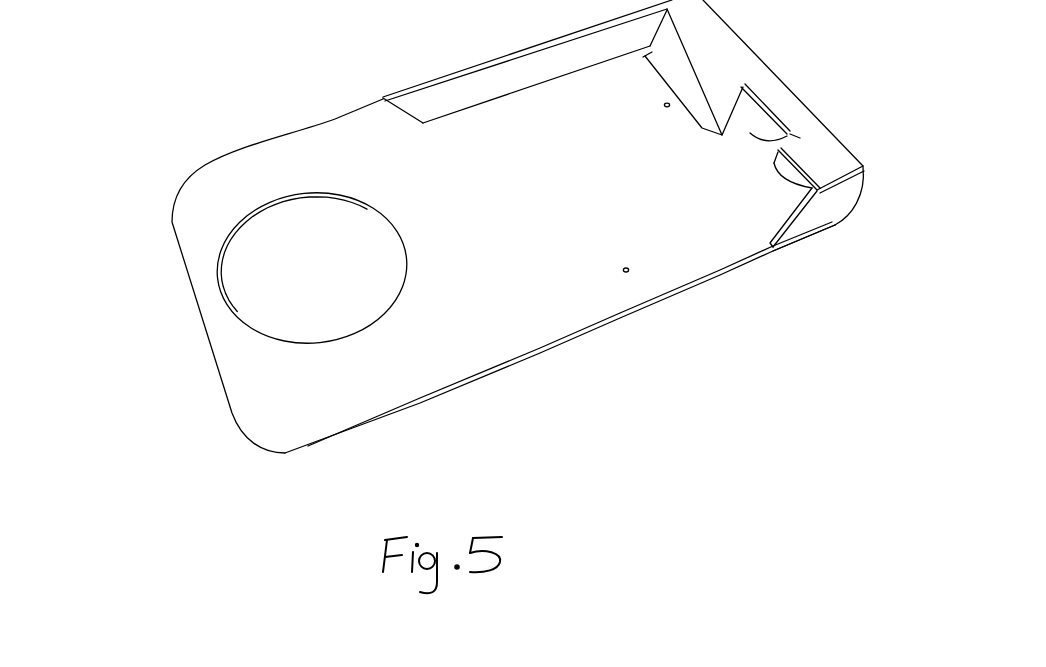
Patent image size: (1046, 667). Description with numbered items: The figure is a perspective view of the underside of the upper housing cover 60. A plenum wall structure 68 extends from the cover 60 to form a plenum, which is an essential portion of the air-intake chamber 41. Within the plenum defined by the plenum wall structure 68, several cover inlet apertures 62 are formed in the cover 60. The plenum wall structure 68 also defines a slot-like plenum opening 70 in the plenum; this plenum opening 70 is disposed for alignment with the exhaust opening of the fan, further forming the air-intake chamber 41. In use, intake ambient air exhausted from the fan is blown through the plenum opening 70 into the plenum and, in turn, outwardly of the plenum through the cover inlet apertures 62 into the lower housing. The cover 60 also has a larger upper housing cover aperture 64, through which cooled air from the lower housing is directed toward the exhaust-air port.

The air-intake chamber 41 is at (762, 219).
The upper housing cover 60 is at (568, 325).
The cover inlet apertures 62 is at (750, 134).
The upper housing cover aperture 64 is at (235, 230).
The plenum wall structure 68 is at (443, 88).
The plenum opening 70 is at (727, 105).